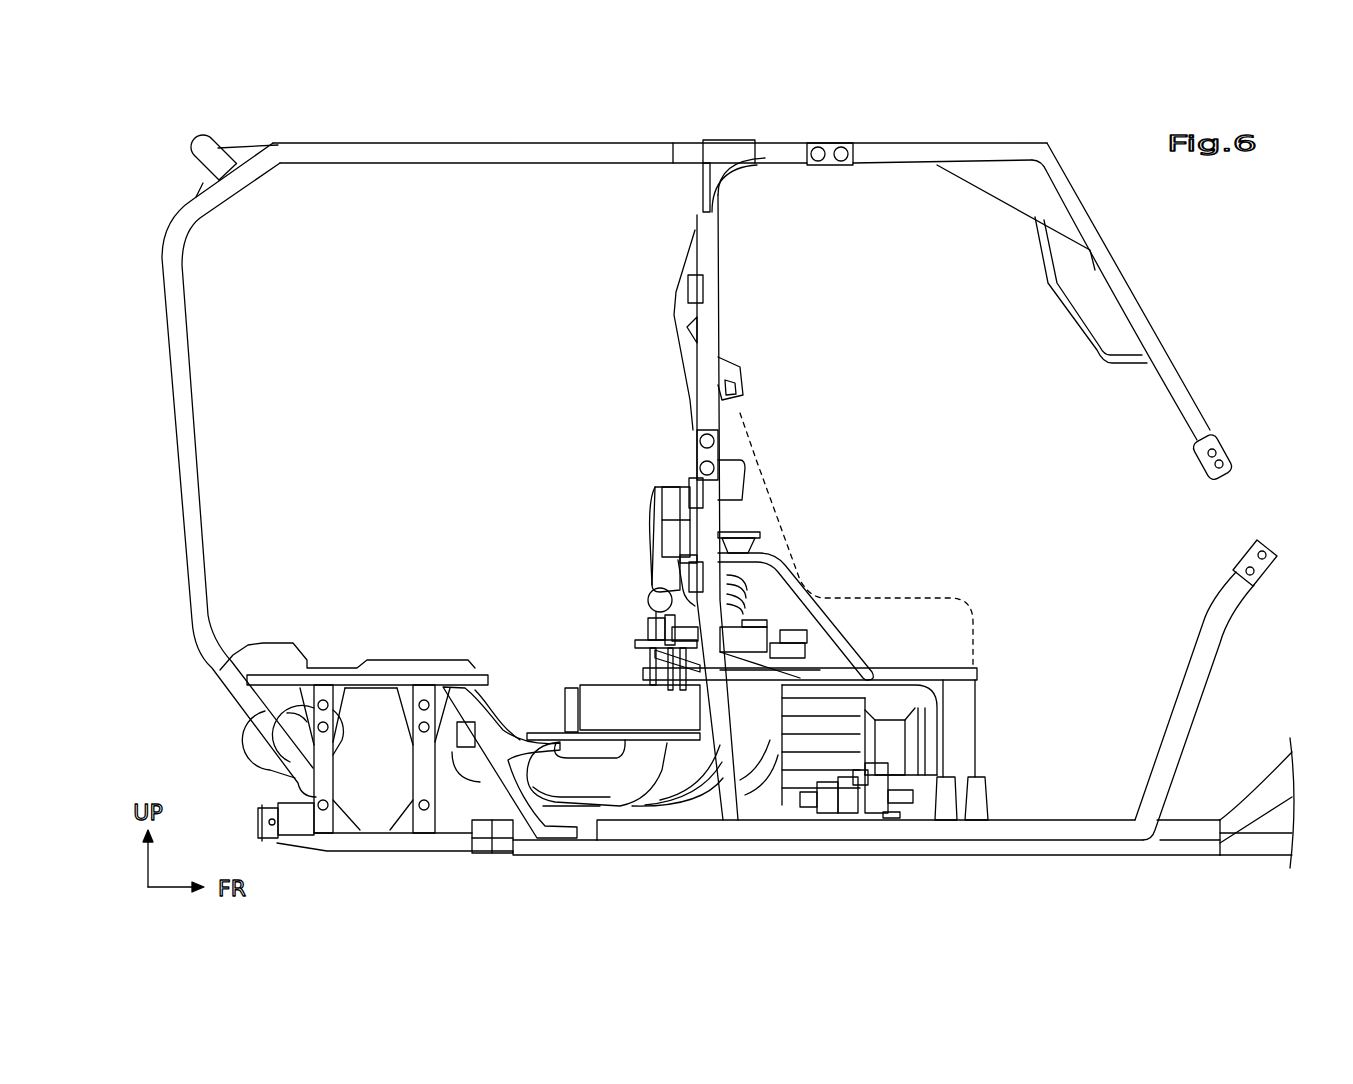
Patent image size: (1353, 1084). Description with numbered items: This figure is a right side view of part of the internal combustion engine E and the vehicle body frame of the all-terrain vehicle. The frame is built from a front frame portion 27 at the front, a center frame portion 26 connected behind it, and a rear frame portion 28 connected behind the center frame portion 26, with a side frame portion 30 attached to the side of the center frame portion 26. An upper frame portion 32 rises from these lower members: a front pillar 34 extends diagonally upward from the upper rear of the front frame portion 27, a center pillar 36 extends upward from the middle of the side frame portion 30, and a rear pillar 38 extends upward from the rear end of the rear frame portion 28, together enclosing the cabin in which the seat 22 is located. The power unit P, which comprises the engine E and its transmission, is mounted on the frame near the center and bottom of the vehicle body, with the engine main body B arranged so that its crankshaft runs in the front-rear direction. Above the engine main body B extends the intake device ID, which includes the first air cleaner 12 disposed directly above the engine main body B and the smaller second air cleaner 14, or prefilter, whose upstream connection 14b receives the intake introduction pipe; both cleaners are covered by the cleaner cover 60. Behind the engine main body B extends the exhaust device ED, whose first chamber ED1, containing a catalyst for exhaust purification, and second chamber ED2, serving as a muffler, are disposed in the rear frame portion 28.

The upper frame portion 32 is at (447, 142).
The front pillar 34 is at (1137, 298).
The center pillar 36 is at (712, 305).
The rear pillar 38 is at (180, 425).
The seat 22 is at (755, 466).
The intake device ID is at (661, 464).
The first air cleaner 12 is at (680, 493).
The cleaner cover 60 is at (660, 507).
The second air cleaner 14 is at (682, 560).
The engine main body B is at (658, 612).
The internal combustion engine E is at (632, 611).
The power unit P is at (603, 652).
The rear frame portion 28 is at (372, 672).
The second chamber ED2 is at (237, 730).
The exhaust device ED is at (236, 765).
The first chamber ED1 is at (480, 768).
The center frame portion 26 is at (613, 850).
The upstream connection 14b is at (656, 612).
The side frame portion 30 is at (770, 826).
The front frame portion 27 is at (1249, 846).